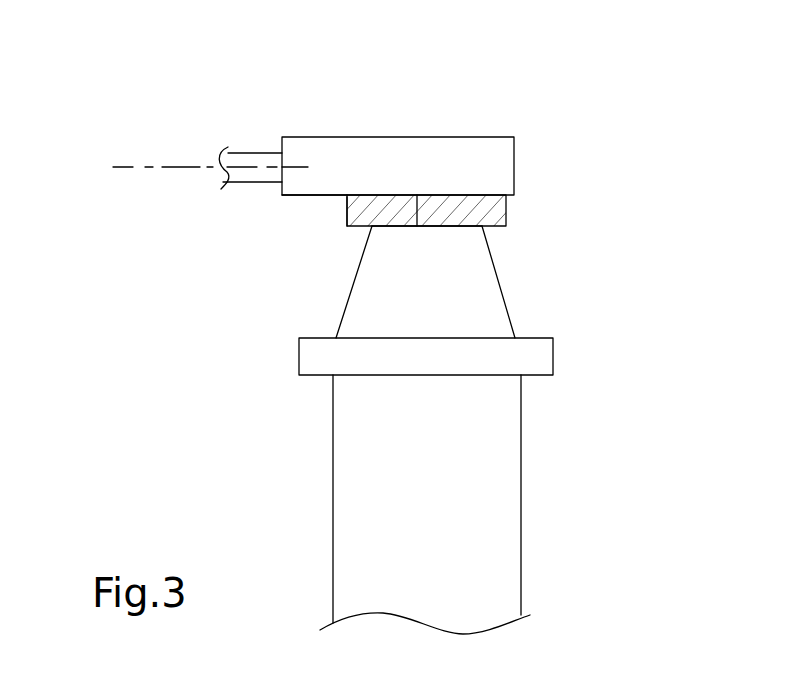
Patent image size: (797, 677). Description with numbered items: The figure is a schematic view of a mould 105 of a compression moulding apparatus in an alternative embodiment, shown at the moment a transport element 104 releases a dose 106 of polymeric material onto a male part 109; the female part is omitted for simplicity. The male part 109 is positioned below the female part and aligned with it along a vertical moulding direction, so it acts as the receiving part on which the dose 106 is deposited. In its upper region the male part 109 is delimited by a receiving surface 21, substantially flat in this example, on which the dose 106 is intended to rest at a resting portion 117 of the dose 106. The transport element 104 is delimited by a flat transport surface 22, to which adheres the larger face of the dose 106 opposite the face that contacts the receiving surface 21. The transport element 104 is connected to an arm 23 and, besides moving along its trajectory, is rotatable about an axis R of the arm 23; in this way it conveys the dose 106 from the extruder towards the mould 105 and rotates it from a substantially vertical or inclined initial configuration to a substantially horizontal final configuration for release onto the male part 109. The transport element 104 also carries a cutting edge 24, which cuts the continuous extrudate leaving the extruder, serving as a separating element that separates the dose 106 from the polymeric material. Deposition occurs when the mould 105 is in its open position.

The axis R is at (132, 167).
The receiving surface 21 is at (417, 226).
The flat transport surface 22 is at (302, 197).
The arm 23 is at (252, 153).
The cutting edge 24 is at (507, 197).
The transport element 104 is at (494, 158).
The mould 105 is at (585, 282).
The dose 106 is at (347, 215).
The male part 109 is at (507, 318).
The resting portion 117 is at (398, 226).